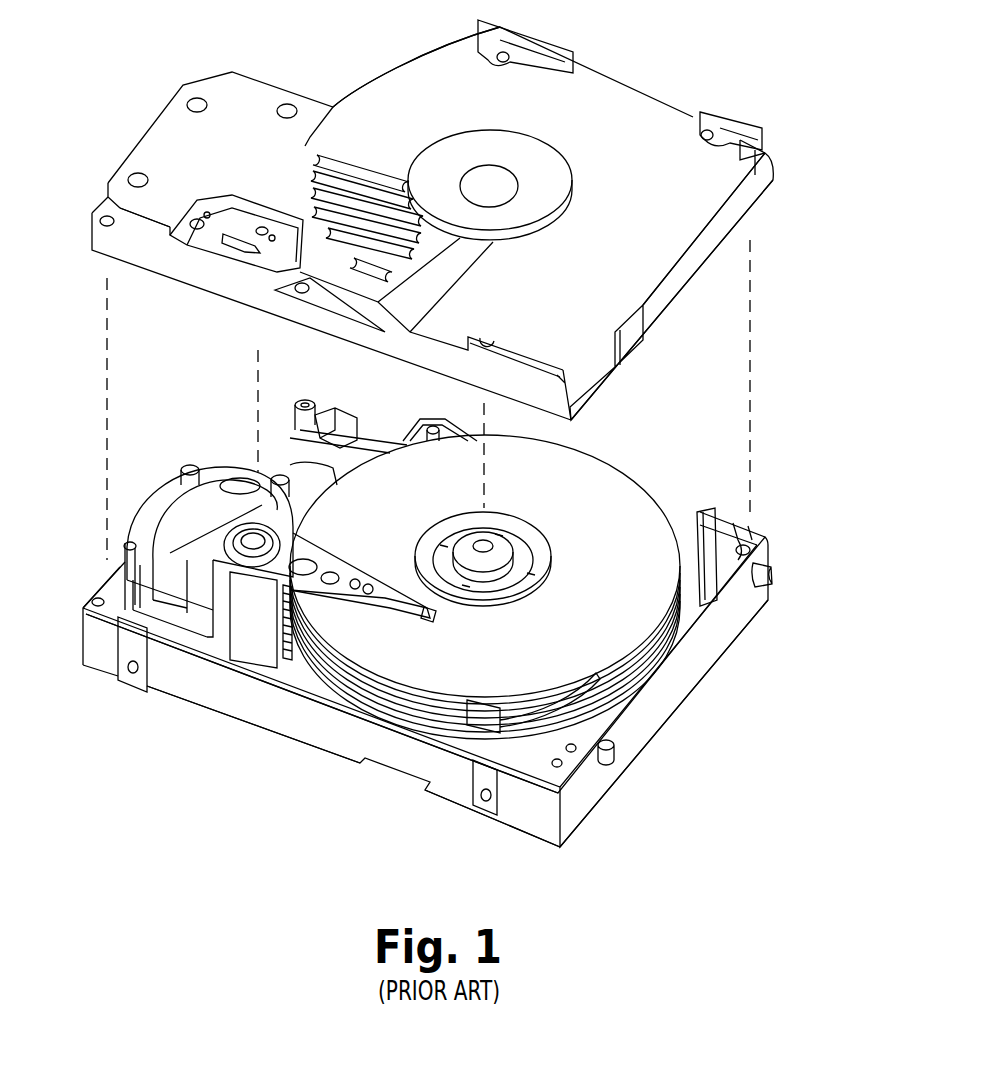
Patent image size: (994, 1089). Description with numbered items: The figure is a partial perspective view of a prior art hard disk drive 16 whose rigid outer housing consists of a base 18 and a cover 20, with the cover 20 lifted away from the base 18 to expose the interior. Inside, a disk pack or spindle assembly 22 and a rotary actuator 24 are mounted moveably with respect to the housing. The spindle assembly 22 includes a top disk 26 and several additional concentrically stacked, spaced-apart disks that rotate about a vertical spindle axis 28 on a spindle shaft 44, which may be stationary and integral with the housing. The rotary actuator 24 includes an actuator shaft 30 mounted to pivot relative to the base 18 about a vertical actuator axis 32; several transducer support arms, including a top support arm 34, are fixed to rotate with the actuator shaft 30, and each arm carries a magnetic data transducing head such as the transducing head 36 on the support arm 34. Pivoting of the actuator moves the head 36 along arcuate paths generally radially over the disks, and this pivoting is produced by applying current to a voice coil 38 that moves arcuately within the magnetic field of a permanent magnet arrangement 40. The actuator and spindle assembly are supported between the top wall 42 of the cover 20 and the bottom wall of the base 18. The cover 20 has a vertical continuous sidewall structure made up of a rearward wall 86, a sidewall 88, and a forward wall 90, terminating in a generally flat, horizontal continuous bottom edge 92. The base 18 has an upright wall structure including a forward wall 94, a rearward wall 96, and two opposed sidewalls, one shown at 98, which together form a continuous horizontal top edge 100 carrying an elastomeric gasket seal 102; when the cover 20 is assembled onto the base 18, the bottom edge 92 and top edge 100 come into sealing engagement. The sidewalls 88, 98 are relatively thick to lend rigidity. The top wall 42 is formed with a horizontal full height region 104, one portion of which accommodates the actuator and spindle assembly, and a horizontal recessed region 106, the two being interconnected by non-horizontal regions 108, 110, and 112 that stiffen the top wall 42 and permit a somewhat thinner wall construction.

The hard disk drive 16 is at (141, 107).
The base 18 is at (700, 655).
The cover 20 is at (610, 98).
The spindle assembly 22 is at (642, 481).
The rotary actuator 24 is at (253, 633).
The top disk 26 is at (586, 480).
The spindle axis 28 is at (480, 490).
The actuator shaft 30 is at (268, 542).
The actuator axis 32 is at (258, 390).
The top support arm 34 is at (355, 593).
The transducing head 36 is at (430, 618).
The voice coil 38 is at (142, 522).
The permanent magnet arrangement 40 is at (227, 487).
The top wall 42 is at (387, 100).
The spindle shaft 44 is at (494, 555).
The rearward wall 86 is at (672, 296).
The sidewall 88 is at (172, 265).
The forward wall 90 is at (125, 158).
The bottom edge 92 is at (365, 350).
The forward wall 94 is at (101, 593).
The rearward wall 96 is at (637, 745).
The sidewall 98 is at (318, 737).
The top edge 100 is at (752, 528).
The elastomeric gasket seal 102 is at (667, 665).
The full height region 104 is at (237, 92).
The recessed region 106 is at (723, 187).
The non-horizontal region 108 is at (538, 240).
The non-horizontal region 110 is at (437, 280).
The non-horizontal region 112 is at (337, 138).